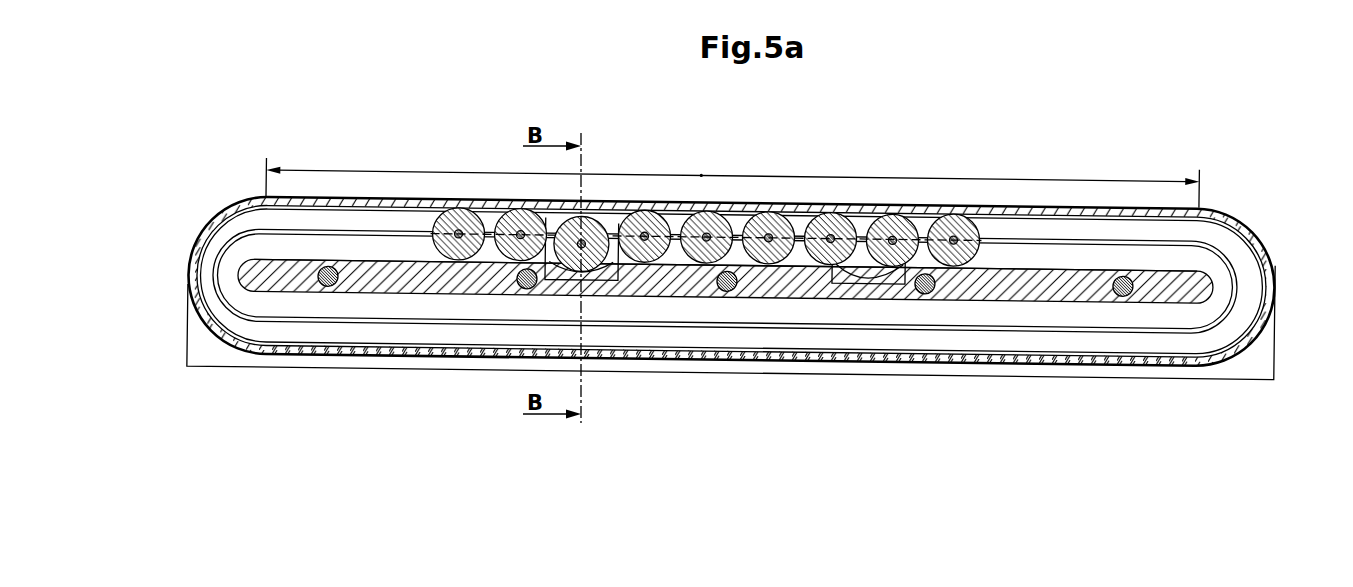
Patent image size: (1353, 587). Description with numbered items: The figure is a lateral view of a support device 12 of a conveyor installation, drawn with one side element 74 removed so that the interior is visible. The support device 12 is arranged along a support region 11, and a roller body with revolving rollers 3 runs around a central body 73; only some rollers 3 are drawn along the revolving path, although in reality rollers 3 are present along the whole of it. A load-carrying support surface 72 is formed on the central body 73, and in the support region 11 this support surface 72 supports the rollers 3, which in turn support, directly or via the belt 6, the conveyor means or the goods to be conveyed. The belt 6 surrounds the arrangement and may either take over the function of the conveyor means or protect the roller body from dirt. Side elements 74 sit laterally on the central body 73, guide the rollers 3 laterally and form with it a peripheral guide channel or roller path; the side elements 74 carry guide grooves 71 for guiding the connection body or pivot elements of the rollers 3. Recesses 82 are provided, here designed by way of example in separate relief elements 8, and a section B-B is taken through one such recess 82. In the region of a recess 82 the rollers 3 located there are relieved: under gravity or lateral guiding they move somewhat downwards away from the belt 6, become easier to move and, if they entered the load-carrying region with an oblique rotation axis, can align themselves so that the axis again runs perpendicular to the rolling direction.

The rollers 3 is at (822, 213).
The belt 6 is at (1215, 212).
The relief element 8 is at (549, 218).
The support region 11 is at (705, 175).
The support device 12 is at (1117, 163).
The guide grooves 71 is at (237, 240).
The support surface 72 is at (375, 258).
The central body 73 is at (267, 275).
The side element 74 is at (208, 353).
The recess 82 is at (612, 263).